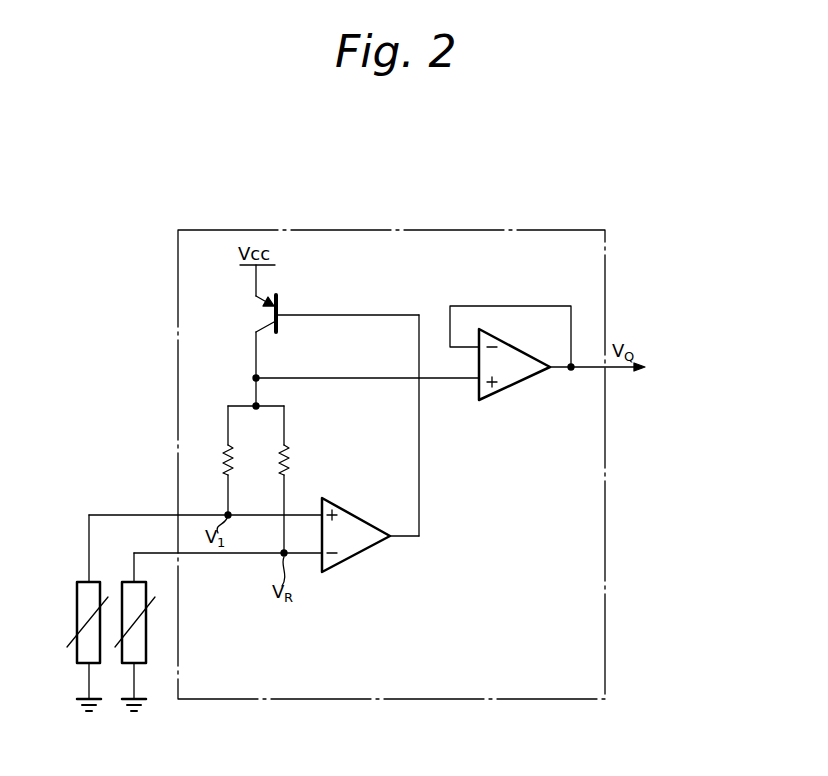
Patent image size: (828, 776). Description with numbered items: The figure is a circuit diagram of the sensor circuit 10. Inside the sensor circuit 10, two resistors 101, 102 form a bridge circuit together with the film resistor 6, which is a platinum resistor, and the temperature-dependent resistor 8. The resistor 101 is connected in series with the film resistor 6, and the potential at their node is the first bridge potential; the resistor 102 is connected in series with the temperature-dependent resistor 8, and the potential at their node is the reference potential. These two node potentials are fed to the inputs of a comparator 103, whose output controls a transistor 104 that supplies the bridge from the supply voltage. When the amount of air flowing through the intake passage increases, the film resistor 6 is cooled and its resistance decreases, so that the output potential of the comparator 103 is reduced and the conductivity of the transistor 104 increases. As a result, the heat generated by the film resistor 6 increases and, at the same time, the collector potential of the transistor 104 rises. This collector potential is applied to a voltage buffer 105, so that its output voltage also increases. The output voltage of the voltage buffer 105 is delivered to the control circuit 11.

The sensor circuit 10 is at (405, 229).
The film resistor 6 is at (77, 616).
The temperature-dependent resistor 8 is at (150, 622).
The resistor 101 is at (225, 460).
The resistor 102 is at (288, 458).
The comparator 103 is at (372, 512).
The transistor 104 is at (268, 316).
The voltage buffer 105 is at (513, 385).
The control circuit 11 is at (662, 400).